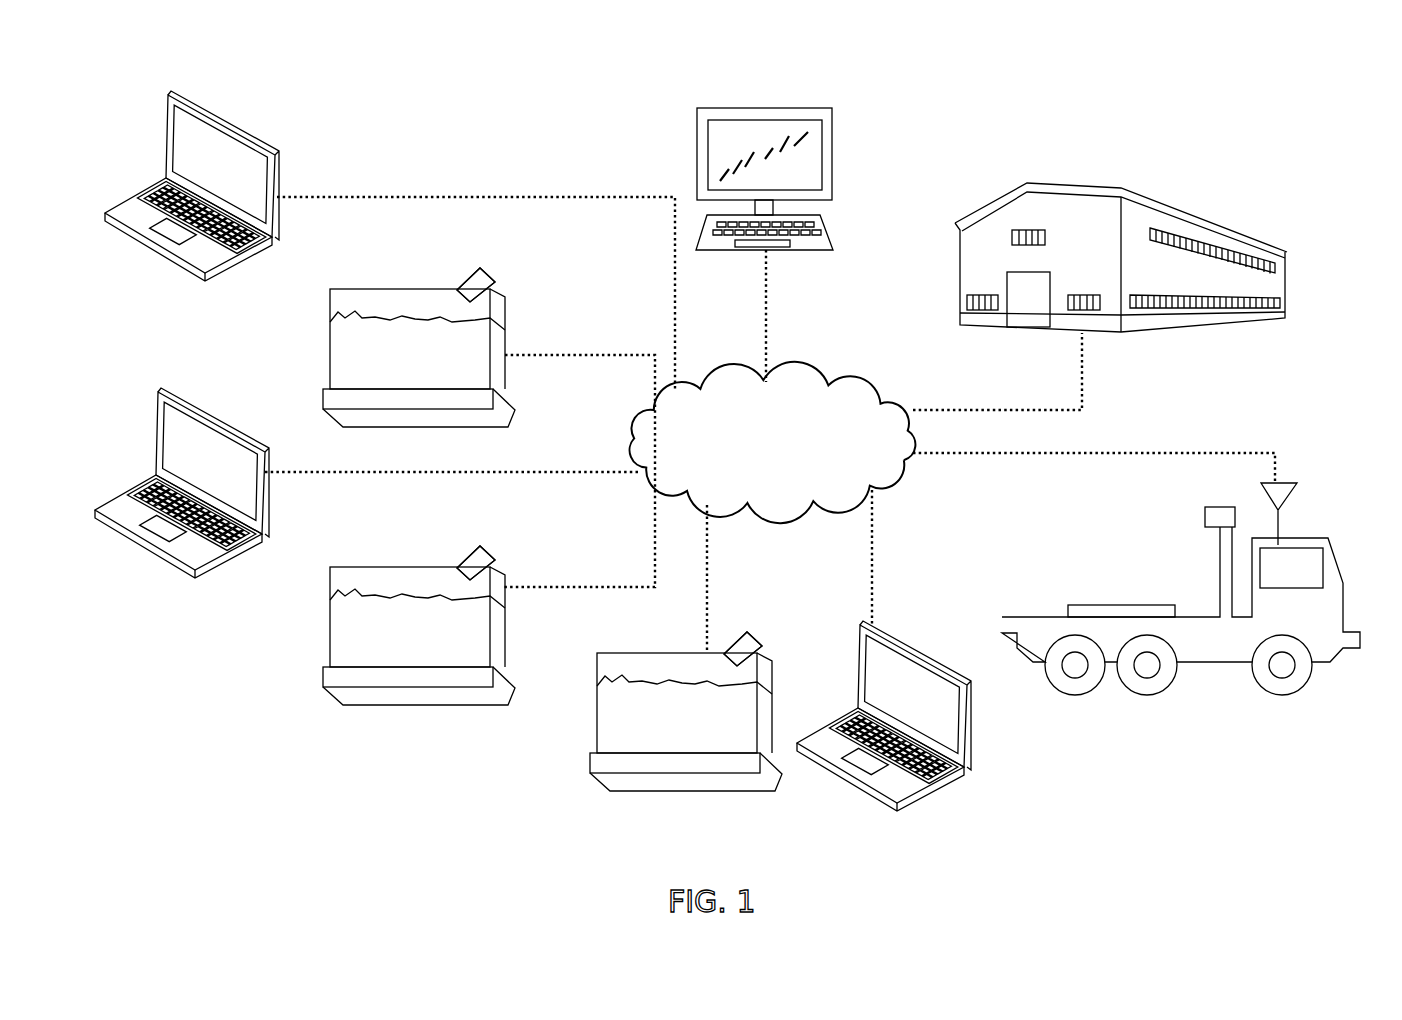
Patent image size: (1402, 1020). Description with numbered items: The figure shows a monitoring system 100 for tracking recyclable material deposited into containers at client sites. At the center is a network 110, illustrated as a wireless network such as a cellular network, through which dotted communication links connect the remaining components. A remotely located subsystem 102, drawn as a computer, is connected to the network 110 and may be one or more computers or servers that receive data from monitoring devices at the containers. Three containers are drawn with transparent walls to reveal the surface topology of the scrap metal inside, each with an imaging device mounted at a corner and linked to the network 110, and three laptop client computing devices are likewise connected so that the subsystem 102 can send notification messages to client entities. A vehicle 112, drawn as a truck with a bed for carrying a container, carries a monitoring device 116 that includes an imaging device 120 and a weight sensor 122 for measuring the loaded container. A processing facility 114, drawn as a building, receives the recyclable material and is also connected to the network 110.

The monitoring system 100 is at (447, 95).
The remotely located subsystem 102 is at (800, 108).
The network 110 is at (848, 377).
The vehicle 112 is at (1340, 557).
The processing facility 114 is at (1083, 186).
The monitoring device 116 is at (1192, 581).
The imaging device 120 is at (1205, 513).
The weight sensor 122 is at (1123, 605).